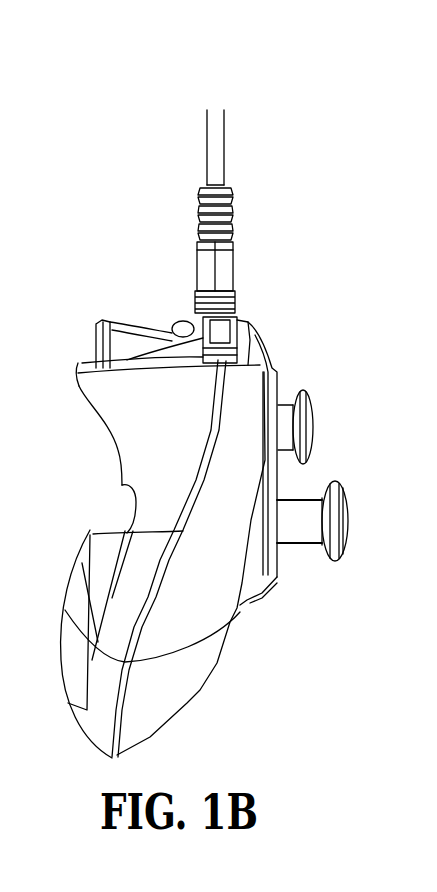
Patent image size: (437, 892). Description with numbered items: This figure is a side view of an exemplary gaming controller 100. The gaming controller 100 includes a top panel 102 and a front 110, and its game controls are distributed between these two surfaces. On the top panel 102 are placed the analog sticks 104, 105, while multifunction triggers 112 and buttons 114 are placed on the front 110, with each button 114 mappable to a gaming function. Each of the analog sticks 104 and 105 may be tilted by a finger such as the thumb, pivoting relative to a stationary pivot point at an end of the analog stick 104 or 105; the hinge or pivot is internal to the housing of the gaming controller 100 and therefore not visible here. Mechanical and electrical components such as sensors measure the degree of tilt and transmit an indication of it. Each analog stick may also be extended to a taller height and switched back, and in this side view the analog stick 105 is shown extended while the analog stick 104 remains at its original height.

The gaming controller 100 is at (80, 84).
The top panel 102 is at (246, 632).
The analog stick 104 is at (318, 428).
The analog stick 105 is at (347, 522).
The front 110 is at (244, 322).
The multifunction trigger 112 is at (112, 318).
The button 114 is at (221, 342).